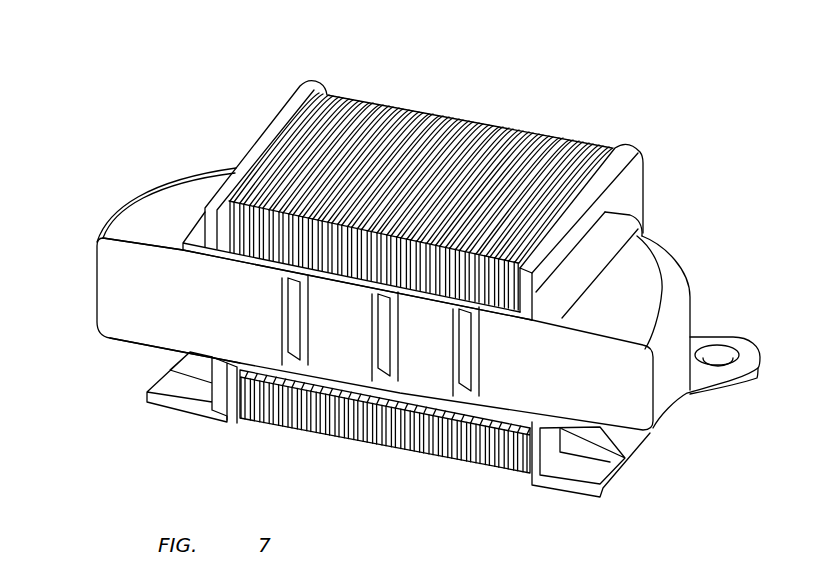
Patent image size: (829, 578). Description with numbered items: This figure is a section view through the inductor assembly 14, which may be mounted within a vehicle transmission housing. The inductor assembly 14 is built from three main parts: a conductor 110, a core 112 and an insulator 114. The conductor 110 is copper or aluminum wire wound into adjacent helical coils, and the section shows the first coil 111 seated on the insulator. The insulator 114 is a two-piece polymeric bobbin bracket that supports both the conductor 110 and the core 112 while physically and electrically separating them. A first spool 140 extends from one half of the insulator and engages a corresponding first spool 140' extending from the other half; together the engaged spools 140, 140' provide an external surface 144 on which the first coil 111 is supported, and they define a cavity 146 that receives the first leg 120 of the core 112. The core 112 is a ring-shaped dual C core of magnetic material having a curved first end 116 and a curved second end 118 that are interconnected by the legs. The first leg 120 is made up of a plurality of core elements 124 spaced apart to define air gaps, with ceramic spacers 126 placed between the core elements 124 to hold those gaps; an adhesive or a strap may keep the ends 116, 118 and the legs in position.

The inductor assembly 14 is at (100, 165).
The conductor 110 is at (540, 128).
The first coil 111 is at (450, 115).
The core 112 is at (700, 307).
The insulator 114 is at (656, 180).
The first end 116 is at (127, 312).
The second end 118 is at (632, 407).
The first leg 120 is at (290, 352).
The core elements 124 is at (355, 341).
The ceramic spacers 126 is at (297, 322).
The first spool 140 is at (408, 160).
The first spool 140' is at (626, 232).
The external surface 144 is at (205, 272).
The cavity 146 is at (226, 307).